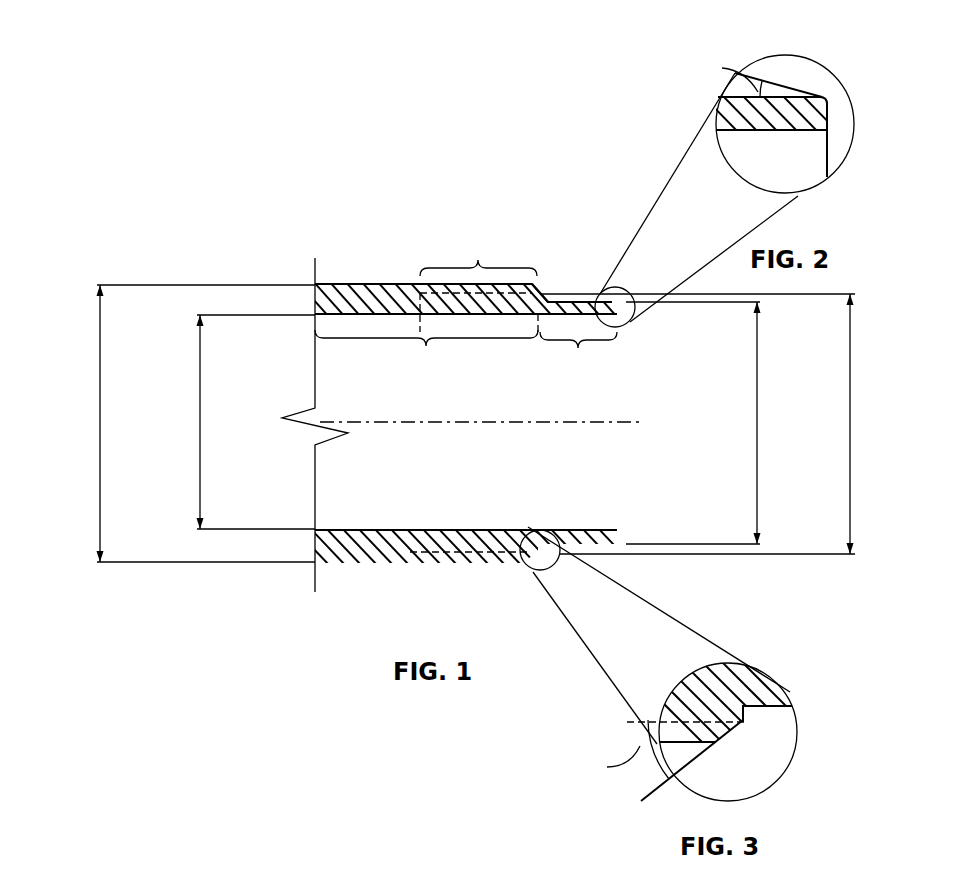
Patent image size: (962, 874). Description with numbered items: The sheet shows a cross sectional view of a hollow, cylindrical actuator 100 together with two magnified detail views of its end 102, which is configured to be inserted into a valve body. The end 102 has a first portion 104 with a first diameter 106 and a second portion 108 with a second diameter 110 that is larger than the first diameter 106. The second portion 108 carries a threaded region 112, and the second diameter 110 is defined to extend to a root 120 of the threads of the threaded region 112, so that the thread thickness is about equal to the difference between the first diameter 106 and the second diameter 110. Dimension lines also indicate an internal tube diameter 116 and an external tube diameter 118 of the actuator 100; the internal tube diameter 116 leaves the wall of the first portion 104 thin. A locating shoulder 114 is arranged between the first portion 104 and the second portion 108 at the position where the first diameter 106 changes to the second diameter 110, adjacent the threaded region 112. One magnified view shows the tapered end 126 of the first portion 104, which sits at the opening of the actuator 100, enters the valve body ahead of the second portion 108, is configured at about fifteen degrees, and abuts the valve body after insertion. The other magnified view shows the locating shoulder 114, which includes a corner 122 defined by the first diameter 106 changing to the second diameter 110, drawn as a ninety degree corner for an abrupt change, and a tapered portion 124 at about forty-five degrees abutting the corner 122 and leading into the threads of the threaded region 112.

In FIG. 1, the actuator 100 is at (298, 195).
In FIG. 1, the end 102 is at (624, 474).
In FIG. 1, the first portion 104 is at (576, 352).
In FIG. 1, the first diameter 106 is at (757, 440).
In FIG. 1, the second portion 108 is at (424, 350).
In FIG. 1, the second diameter 110 is at (850, 440).
In FIG. 1, the threaded region 112 is at (478, 258).
In FIG. 1, the locating shoulder 114 is at (529, 570).
In FIG. 3, the locating shoulder 114 is at (674, 668).
In FIG. 1, the internal tube diameter 116 is at (200, 440).
In FIG. 1, the external tube diameter 118 is at (100, 440).
In FIG. 1, the root of threads 120 is at (546, 290).
In FIG. 3, the corner 122 is at (750, 724).
In FIG. 3, the tapered portion 124 is at (738, 746).
In FIG. 1, the tapered end 126 is at (624, 318).
In FIG. 2, the tapered end 126 is at (788, 65).